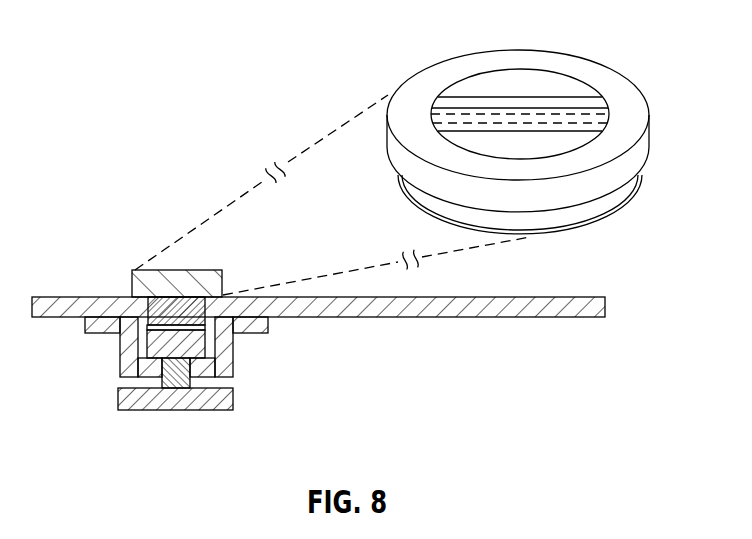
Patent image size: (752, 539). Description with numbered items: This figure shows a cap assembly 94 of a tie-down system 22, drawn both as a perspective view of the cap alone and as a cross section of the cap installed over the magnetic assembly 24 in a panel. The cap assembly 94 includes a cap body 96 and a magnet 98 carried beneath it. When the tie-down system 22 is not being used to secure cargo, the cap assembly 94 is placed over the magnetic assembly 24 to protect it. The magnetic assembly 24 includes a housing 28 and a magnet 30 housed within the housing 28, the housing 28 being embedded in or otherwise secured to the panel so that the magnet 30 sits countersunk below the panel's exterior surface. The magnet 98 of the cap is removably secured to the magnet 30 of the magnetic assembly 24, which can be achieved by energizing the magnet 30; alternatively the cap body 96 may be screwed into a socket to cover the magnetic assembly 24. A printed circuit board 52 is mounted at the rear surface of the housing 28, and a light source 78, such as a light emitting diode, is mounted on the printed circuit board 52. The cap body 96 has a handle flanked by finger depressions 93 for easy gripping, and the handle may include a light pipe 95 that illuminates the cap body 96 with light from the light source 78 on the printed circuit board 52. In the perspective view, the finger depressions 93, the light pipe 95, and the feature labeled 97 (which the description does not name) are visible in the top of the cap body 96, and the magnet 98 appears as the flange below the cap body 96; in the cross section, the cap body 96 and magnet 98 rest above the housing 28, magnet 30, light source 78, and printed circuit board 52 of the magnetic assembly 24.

The tie-down system 22 is at (97, 237).
The magnetic assembly 24 is at (108, 340).
The housing 28 is at (120, 368).
The magnet 30 is at (202, 348).
The printed circuit board 52 is at (143, 412).
The light source 78 is at (183, 388).
The finger depressions 93 is at (473, 92).
The cap assembly 94 is at (618, 52).
The light pipe 95 is at (593, 120).
The cap body 96 is at (632, 107).
The slot 97 is at (527, 100).
The magnet 98 is at (592, 210).